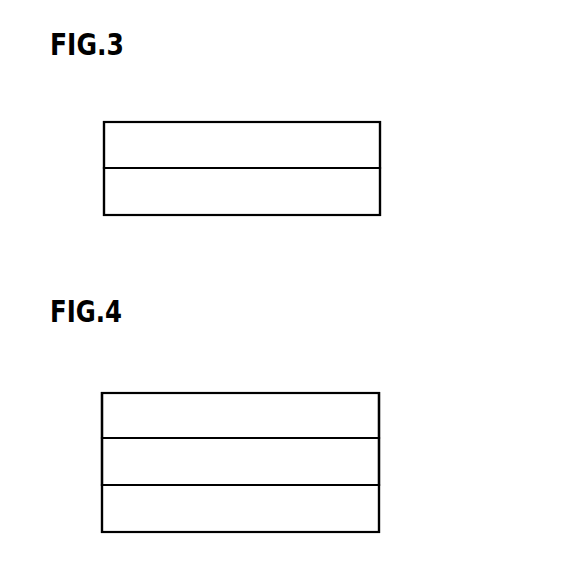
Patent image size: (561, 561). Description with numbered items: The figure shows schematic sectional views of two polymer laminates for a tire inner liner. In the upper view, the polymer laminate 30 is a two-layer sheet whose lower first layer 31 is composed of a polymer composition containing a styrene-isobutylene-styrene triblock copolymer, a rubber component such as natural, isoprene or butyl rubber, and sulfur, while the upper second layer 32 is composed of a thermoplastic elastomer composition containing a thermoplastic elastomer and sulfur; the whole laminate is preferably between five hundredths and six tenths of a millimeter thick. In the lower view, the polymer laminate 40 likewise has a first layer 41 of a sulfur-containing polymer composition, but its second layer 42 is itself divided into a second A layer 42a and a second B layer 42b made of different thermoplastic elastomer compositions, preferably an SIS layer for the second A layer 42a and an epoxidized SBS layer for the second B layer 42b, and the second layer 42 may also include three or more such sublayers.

In FIG. 3, the polymer laminate for an inner liner 30 is at (331, 92).
In FIG. 3, the first layer 31 is at (367, 193).
In FIG. 3, the second layer 32 is at (367, 145).
In FIG. 4, the polymer laminate for an inner liner 40 is at (329, 362).
In FIG. 4, the first layer 41 is at (365, 508).
In FIG. 4, the second layer 42 is at (468, 398).
In FIG. 4, the second A layer 42a is at (365, 463).
In FIG. 4, the second B layer 42b is at (365, 415).